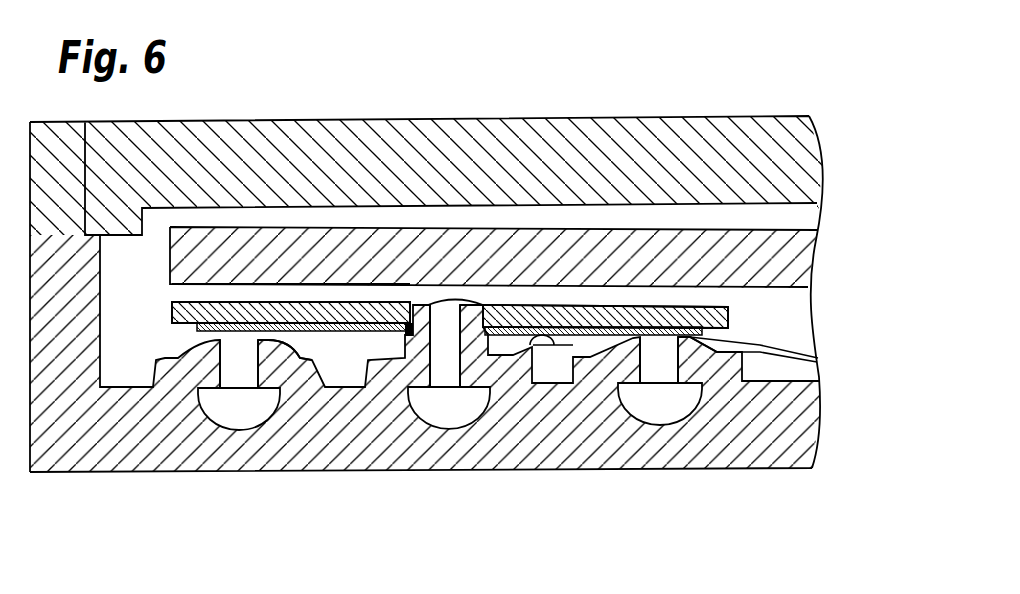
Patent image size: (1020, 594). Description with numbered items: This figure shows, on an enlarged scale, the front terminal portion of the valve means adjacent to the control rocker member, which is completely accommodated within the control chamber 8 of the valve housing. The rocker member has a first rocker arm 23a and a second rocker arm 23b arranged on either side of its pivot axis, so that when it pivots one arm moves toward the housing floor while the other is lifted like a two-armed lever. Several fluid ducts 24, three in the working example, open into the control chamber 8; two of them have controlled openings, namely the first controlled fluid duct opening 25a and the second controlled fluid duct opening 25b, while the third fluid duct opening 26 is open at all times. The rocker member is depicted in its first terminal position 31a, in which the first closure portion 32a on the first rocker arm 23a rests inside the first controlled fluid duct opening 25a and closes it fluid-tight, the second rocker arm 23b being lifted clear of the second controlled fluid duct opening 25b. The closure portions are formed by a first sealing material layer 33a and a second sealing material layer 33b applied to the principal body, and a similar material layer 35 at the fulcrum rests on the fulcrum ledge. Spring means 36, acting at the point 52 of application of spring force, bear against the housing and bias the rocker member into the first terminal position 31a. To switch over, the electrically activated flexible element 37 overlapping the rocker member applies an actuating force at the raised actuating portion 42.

The control chamber 8 is at (460, 213).
The flexible element 37 is at (322, 250).
The material layer 35 is at (400, 303).
The point of application of spring force 52 is at (552, 336).
The first terminal position 31a is at (640, 296).
The first rocker arm 23a is at (728, 312).
The second rocker arm 23b is at (172, 311).
The spring means 36 is at (780, 350).
The actuating portion 42 is at (223, 294).
The fluid ducts 24 is at (215, 405).
The second sealing material layer 33b is at (240, 326).
The second controlled fluid duct opening 25b is at (255, 340).
The third fluid duct opening 26 is at (462, 300).
The first closure portion 32a is at (643, 337).
The first sealing material layer 33a is at (660, 337).
The first controlled fluid duct opening 25a is at (674, 337).